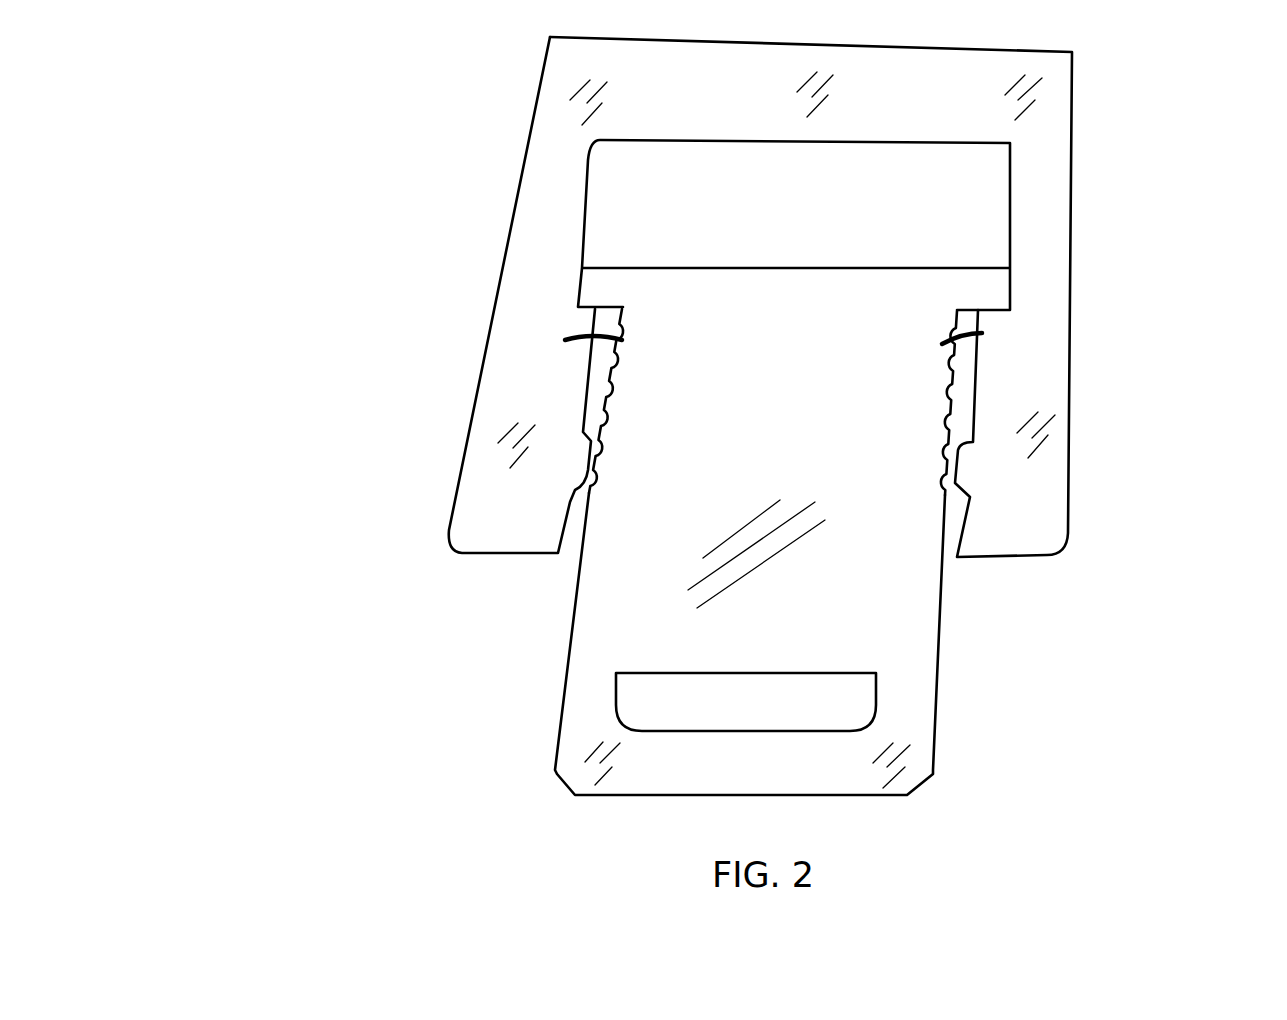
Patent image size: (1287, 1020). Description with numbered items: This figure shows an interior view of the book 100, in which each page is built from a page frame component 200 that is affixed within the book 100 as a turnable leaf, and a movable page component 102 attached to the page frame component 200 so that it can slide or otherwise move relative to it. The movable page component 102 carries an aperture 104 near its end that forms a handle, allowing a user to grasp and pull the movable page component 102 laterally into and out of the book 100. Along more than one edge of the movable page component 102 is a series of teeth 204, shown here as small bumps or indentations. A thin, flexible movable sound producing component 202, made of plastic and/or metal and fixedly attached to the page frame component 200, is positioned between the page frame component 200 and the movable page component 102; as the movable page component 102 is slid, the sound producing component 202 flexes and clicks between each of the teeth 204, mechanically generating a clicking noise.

The book 100 is at (360, 105).
The movable page component 102 is at (603, 628).
The aperture 104 is at (852, 703).
The page frame component 200 is at (1058, 208).
The movable sound producing component 202 is at (567, 338).
The teeth 204 is at (627, 324).